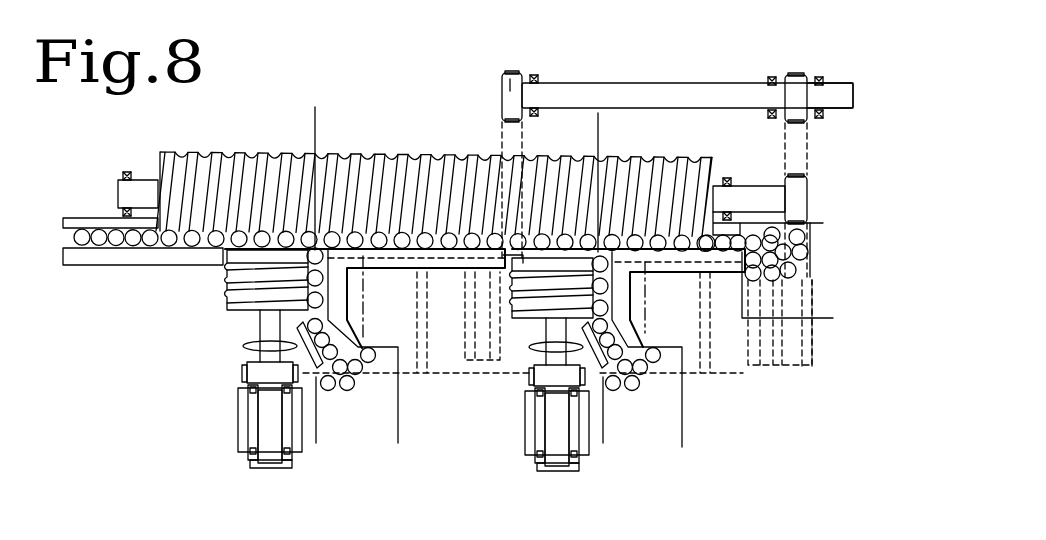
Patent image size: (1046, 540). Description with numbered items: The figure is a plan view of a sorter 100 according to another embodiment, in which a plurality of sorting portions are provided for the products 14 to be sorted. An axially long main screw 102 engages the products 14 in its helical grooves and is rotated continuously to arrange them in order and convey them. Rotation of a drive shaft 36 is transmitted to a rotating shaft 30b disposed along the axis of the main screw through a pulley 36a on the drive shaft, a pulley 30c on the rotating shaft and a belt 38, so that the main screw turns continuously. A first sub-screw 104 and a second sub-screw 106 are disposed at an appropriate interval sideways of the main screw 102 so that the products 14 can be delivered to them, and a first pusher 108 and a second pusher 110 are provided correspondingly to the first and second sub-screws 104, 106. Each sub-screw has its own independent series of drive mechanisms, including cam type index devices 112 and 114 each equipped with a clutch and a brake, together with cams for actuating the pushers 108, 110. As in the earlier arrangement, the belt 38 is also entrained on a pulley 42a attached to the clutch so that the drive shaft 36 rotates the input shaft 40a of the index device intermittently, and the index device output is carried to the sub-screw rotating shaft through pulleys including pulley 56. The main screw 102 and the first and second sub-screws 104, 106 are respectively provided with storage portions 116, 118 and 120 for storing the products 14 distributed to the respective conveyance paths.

The products 14 is at (100, 246).
The rotating shaft 30b is at (753, 185).
The pulley 30c is at (805, 207).
The drive shaft 36 is at (840, 83).
The pulley 36a is at (510, 72).
The belt 38 is at (515, 132).
The input shaft 40a is at (815, 312).
The pulley 42a is at (502, 350).
The pulley 56 is at (245, 375).
The sorter 100 is at (675, 66).
The main screw 102 is at (462, 150).
The first sub-screw 104 is at (226, 309).
The second sub-screw 106 is at (519, 330).
The first pusher 108 is at (317, 130).
The second pusher 110 is at (600, 137).
The cam type index device 112 is at (416, 384).
The cam type index device 114 is at (695, 385).
The storage portion 116 is at (738, 300).
The storage portion 118 is at (400, 427).
The storage portion 120 is at (688, 428).